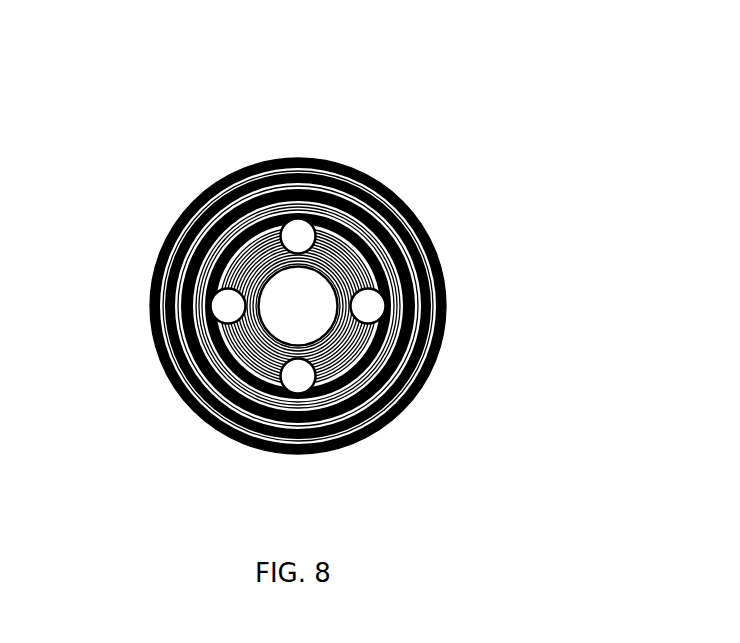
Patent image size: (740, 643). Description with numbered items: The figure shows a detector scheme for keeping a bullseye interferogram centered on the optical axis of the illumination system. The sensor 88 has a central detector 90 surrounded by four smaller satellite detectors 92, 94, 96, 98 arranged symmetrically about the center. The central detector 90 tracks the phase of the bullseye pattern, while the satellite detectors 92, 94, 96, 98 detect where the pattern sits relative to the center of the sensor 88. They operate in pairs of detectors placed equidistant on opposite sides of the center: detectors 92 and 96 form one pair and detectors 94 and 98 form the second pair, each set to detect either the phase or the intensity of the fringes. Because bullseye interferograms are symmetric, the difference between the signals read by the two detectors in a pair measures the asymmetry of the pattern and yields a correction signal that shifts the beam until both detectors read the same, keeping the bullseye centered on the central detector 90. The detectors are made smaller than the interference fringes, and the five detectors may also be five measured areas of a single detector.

The sensor 88 is at (402, 136).
The central detector 90 is at (298, 306).
The satellite detector 92 is at (171, 256).
The satellite detector 94 is at (385, 322).
The satellite detector 96 is at (280, 218).
The satellite detector 98 is at (290, 394).